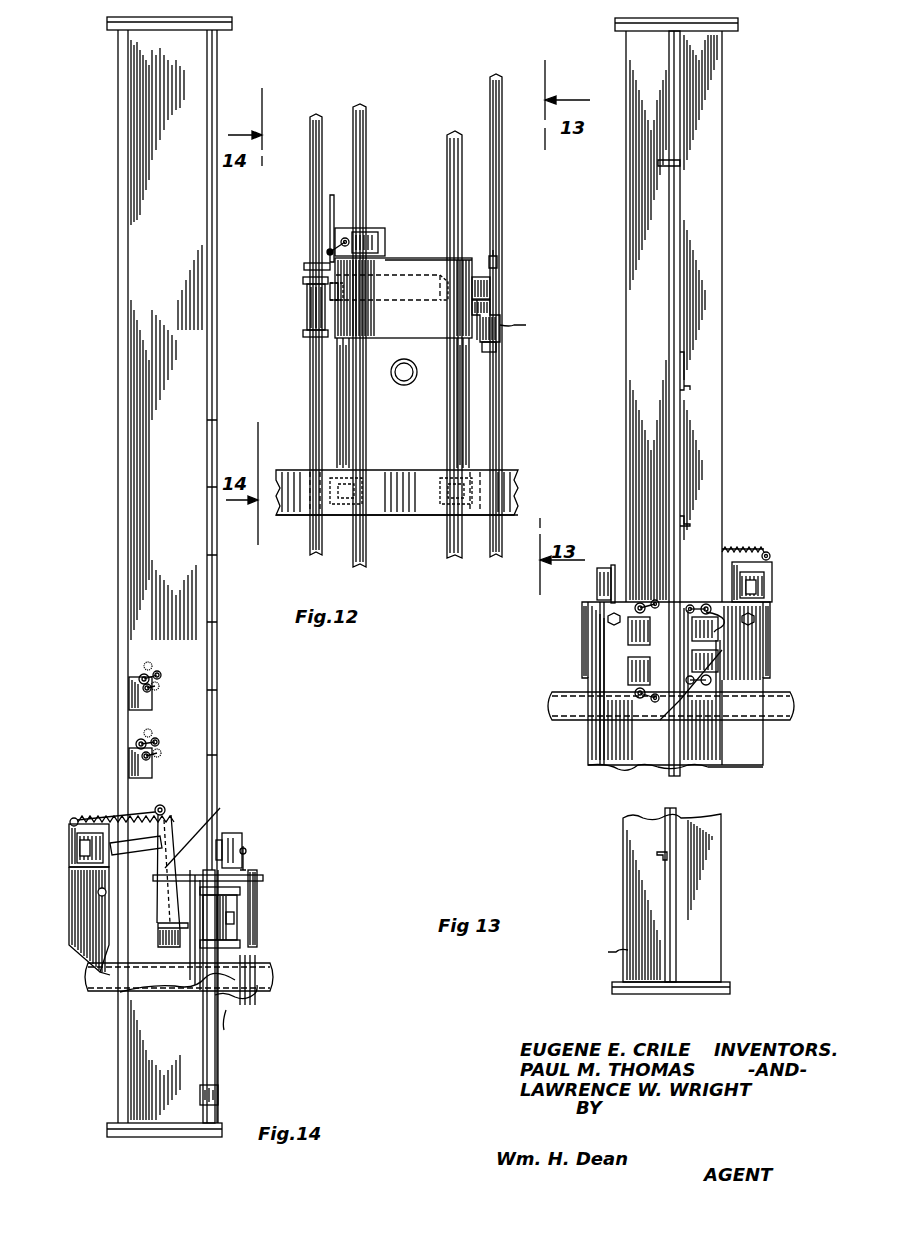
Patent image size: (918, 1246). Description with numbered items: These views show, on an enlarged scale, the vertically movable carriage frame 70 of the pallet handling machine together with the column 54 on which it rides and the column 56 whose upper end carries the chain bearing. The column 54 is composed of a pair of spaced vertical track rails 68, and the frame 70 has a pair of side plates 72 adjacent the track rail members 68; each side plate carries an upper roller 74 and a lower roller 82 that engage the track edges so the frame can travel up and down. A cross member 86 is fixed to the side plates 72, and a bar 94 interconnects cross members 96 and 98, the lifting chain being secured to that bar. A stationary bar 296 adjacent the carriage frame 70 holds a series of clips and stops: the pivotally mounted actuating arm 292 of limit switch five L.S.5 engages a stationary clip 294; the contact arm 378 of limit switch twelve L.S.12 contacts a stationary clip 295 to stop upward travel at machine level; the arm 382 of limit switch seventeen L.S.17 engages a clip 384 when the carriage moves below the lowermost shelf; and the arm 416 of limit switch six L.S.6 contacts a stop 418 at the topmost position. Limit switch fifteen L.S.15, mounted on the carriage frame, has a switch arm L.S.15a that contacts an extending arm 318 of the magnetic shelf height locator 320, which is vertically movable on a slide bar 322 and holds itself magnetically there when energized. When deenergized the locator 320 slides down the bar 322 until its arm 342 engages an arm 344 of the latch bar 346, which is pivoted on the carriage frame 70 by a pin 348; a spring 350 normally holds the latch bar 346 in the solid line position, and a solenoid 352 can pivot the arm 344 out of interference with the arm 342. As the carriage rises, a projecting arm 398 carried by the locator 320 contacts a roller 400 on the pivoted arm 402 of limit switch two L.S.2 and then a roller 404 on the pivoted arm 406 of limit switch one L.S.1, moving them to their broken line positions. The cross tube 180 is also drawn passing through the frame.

In FIG. 14, the column 54 is at (185, 1064).
In FIG. 14, the column 56 is at (208, 40).
In FIG. 13, the column 56 is at (718, 42).
In FIG. 12, the track rails 68 is at (366, 135).
In FIG. 13, the track rails 68 is at (650, 768).
In FIG. 14, the vertically movable frame 70 is at (250, 1002).
In FIG. 12, the vertically movable frame 70 is at (413, 256).
In FIG. 13, the vertically movable frame 70 is at (724, 720).
In FIG. 14, the side plates 72 is at (232, 996).
In FIG. 12, the side plates 72 is at (337, 410).
In FIG. 13, the side plates 72 is at (600, 736).
In FIG. 12, the roller 74 is at (420, 298).
In FIG. 12, the roller 82 is at (437, 480).
In FIG. 12, the cross member 86 is at (408, 515).
In FIG. 12, the bar 94 is at (385, 288).
In FIG. 14, the cross member 96 is at (257, 915).
In FIG. 12, the cross member 96 is at (440, 333).
In FIG. 13, the cross member 96 is at (582, 620).
In FIG. 14, the cross member 98 is at (68, 928).
In FIG. 13, the cross member 98 is at (764, 614).
In FIG. 14, the cross tube 180 is at (272, 978).
In FIG. 12, the cross tube 180 is at (414, 382).
In FIG. 13, the cross tube 180 is at (548, 705).
In FIG. 13, the actuating arm 292 is at (704, 606).
In FIG. 13, the stationary clip 294 is at (692, 388).
In FIG. 13, the stationary clip 295 is at (690, 520).
In FIG. 12, the bar 296 is at (502, 198).
In FIG. 13, the bar 296 is at (680, 300).
In FIG. 14, the arm 318 is at (263, 878).
In FIG. 12, the arm 318 is at (300, 268).
In FIG. 14, the magnetic shelf height locator 320 is at (240, 900).
In FIG. 12, the magnetic shelf height locator 320 is at (306, 302).
In FIG. 14, the slide bar 322 is at (216, 1038).
In FIG. 12, the slide bar 322 is at (308, 205).
In FIG. 14, the arm 342 is at (189, 968).
In FIG. 14, the arm 344 is at (170, 950).
In FIG. 14, the latch bar 346 is at (179, 793).
In FIG. 14, the pin 348 is at (228, 802).
In FIG. 14, the spring 350 is at (100, 812).
In FIG. 13, the spring 350 is at (740, 545).
In FIG. 14, the solenoid 352 is at (78, 850).
In FIG. 13, the solenoid 352 is at (772, 572).
In FIG. 13, the contact arm 378 is at (728, 690).
In FIG. 13, the arm 382 is at (648, 703).
In FIG. 13, the clip 384 is at (657, 856).
In FIG. 14, the projecting arm 398 is at (234, 918).
In FIG. 14, the roller 400 is at (158, 740).
In FIG. 14, the pivoted arm 402 is at (136, 750).
In FIG. 14, the roller 404 is at (160, 672).
In FIG. 14, the pivoted arm 406 is at (138, 676).
In FIG. 12, the arm 416 is at (499, 262).
In FIG. 13, the arm 416 is at (648, 600).
In FIG. 13, the stop 418 is at (680, 163).
In FIG. 14, the limit switch 1 L.S.1 is at (129, 698).
In FIG. 14, the limit switch 2 L.S.2 is at (129, 766).
In FIG. 13, the limit switch 5 L.S.5 is at (708, 604).
In FIG. 12, the limit switch 6 L.S.6 is at (490, 290).
In FIG. 13, the limit switch 6 L.S.6 is at (628, 632).
In FIG. 13, the limit switch 12 L.S.12 is at (718, 652).
In FIG. 14, the limit switch 15 L.S.15 is at (235, 833).
In FIG. 12, the limit switch 15 L.S.15 is at (372, 237).
In FIG. 13, the limit switch 15 L.S.15 is at (597, 584).
In FIG. 14, the arm L.S.15a is at (248, 853).
In FIG. 12, the arm L.S.15a is at (327, 249).
In FIG. 12, the limit switch 17 L.S.17 is at (529, 326).
In FIG. 13, the limit switch 17 L.S.17 is at (628, 668).